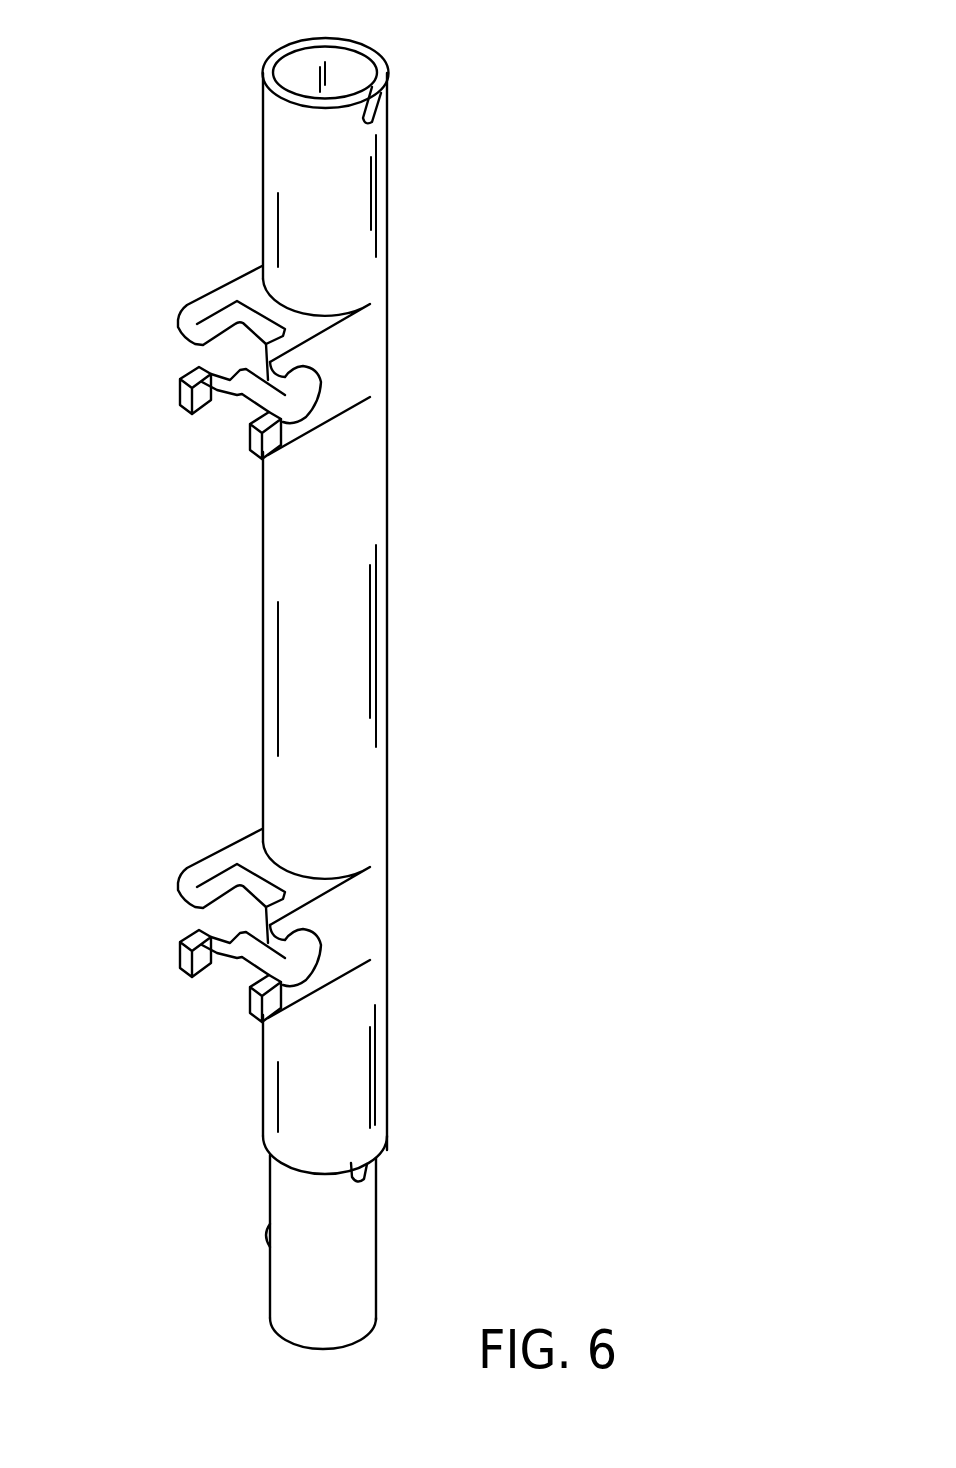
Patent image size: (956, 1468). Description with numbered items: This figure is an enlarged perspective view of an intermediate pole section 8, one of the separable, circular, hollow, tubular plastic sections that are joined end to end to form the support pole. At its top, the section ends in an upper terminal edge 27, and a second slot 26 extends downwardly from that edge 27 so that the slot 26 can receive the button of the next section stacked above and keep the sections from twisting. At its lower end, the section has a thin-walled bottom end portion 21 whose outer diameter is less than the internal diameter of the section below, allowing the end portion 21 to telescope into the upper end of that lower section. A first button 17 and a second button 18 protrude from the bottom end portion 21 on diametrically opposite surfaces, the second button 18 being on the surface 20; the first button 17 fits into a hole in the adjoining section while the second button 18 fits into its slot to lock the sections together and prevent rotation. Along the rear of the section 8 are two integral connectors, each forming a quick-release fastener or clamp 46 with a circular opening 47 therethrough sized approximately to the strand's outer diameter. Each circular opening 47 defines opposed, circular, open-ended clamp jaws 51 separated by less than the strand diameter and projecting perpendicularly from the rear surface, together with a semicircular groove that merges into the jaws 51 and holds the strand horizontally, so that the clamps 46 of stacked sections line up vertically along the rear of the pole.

The intermediate pole section 8 is at (524, 587).
The upper terminal edge 27 is at (378, 50).
The second slot 26 is at (381, 123).
The quick-release fastener or clamp 46 is at (348, 370).
The circular opening 47 is at (316, 937).
The clamp jaws 51 is at (185, 900).
The second button 18 is at (376, 1172).
The surface 20 is at (353, 1267).
The first button 17 is at (267, 1232).
The bottom end portion 21 is at (270, 1280).